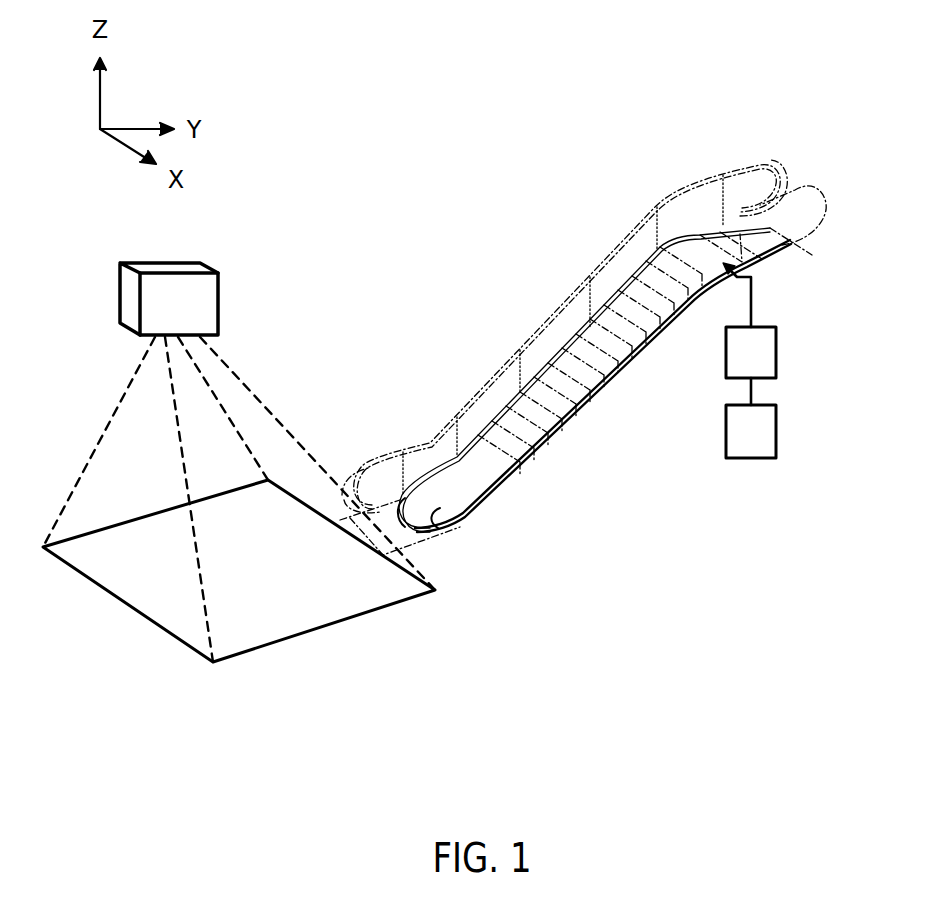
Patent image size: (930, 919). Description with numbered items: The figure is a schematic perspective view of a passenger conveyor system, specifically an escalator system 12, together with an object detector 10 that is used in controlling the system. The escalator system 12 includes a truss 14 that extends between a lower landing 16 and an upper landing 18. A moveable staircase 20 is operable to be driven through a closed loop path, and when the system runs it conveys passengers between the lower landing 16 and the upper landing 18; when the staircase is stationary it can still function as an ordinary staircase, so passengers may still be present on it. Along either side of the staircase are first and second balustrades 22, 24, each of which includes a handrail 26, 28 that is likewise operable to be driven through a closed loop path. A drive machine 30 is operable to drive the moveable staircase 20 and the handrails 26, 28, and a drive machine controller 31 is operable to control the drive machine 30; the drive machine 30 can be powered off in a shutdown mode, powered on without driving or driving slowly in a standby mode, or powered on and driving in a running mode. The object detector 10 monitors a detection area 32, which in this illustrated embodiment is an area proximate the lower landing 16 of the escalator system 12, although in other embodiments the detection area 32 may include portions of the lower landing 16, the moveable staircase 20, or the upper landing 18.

The object detector 10 is at (118, 292).
The escalator system 12 is at (515, 118).
The truss 14 is at (557, 443).
The lower landing 16 is at (346, 500).
The upper landing 18 is at (768, 195).
The moveable staircase 20 is at (572, 292).
The first balustrade 22 is at (452, 433).
The second balustrade 24 is at (437, 490).
The handrail 26 is at (472, 406).
The handrail 28 is at (430, 500).
The drive machine 30 is at (749, 320).
The drive machine controller 31 is at (751, 418).
The detection area 32 is at (239, 571).